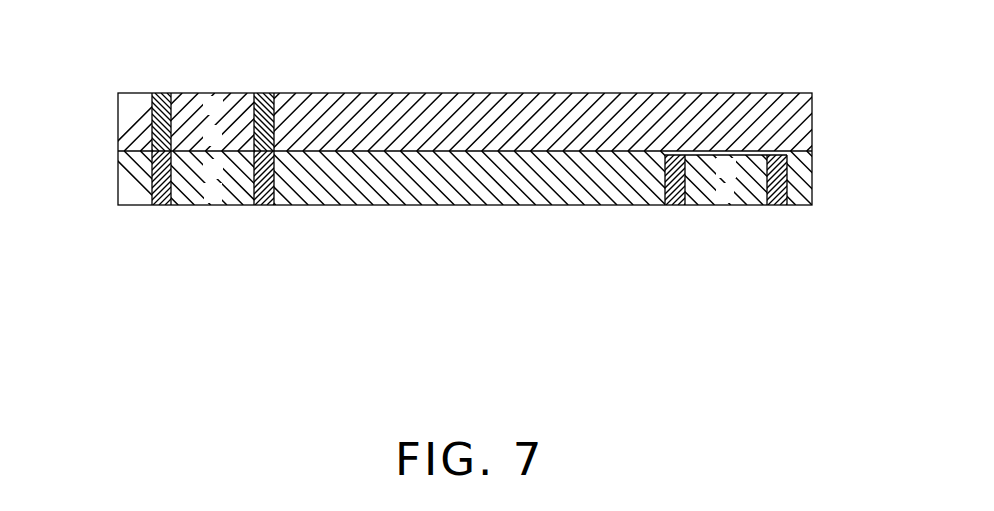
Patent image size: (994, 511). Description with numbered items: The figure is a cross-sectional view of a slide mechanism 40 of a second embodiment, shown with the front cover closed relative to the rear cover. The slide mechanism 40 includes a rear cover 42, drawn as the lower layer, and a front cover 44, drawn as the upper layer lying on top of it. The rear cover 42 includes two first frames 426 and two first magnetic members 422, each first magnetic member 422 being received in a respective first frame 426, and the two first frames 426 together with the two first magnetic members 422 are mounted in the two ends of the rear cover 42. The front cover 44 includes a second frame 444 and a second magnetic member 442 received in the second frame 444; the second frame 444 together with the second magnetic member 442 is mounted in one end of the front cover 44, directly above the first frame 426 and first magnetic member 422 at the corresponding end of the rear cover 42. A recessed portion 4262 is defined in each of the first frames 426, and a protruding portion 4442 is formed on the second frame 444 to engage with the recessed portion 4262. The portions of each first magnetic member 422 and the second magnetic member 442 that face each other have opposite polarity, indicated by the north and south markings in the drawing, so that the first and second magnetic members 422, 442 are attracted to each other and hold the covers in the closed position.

The slide mechanism 40 is at (428, 88).
The rear cover 42 is at (800, 192).
The front cover 44 is at (792, 108).
The second magnetic member 442 is at (200, 92).
The second frame 444 is at (265, 93).
The protruding portion 4442 is at (152, 152).
The first magnetic member 422 is at (187, 198).
The first frame 426 is at (266, 196).
The recessed portion 4262 is at (787, 152).